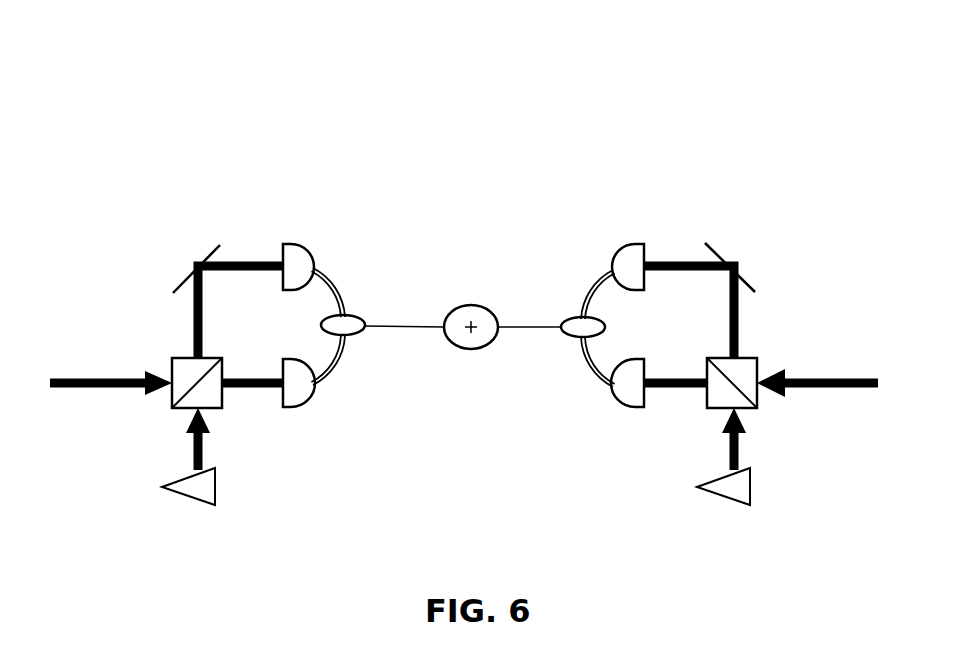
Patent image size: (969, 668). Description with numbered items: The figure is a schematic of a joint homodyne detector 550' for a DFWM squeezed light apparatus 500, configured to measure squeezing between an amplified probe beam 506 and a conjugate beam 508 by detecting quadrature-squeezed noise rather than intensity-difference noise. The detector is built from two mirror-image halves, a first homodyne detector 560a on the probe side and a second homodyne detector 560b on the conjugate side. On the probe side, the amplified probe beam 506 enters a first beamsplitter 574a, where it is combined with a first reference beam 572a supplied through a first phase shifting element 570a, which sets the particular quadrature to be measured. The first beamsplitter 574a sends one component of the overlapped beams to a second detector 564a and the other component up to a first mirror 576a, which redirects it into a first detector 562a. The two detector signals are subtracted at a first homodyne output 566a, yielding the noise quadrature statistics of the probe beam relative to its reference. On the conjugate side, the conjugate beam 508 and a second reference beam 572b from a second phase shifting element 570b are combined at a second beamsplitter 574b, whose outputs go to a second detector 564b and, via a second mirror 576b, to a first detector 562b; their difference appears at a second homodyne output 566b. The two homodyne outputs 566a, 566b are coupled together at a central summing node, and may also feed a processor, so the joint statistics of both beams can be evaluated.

The DFWM squeezed light apparatus 500 is at (772, 66).
The joint homodyne detector 550' is at (740, 143).
The amplified probe beam 506 is at (128, 378).
The conjugate beam 508 is at (838, 378).
The first homodyne detector 560a is at (366, 362).
The second homodyne detector 560b is at (564, 363).
The first detector 562a is at (292, 246).
The first detector 562b is at (620, 245).
The second detector 564a is at (308, 405).
The second detector 564b is at (636, 406).
The first homodyne output 566a is at (350, 315).
The second homodyne output 566b is at (576, 315).
The first phase shifting element 570a is at (188, 497).
The second phase shifting element 570b is at (722, 497).
The first reference beam 572a is at (193, 458).
The second reference beam 572b is at (740, 455).
The first beamsplitter 574a is at (178, 358).
The second beamsplitter 574b is at (717, 358).
The first mirror 576a is at (177, 290).
The second mirror 576b is at (714, 245).